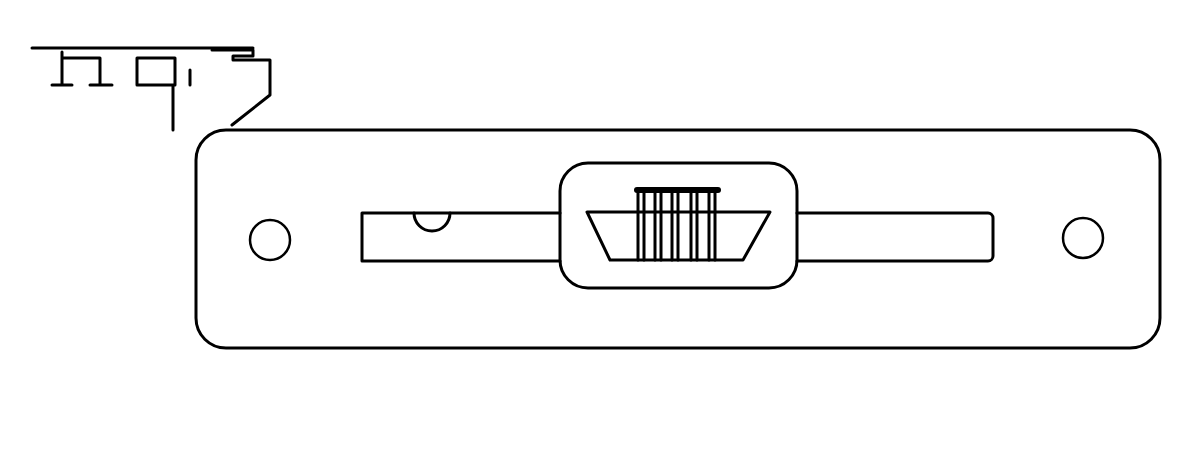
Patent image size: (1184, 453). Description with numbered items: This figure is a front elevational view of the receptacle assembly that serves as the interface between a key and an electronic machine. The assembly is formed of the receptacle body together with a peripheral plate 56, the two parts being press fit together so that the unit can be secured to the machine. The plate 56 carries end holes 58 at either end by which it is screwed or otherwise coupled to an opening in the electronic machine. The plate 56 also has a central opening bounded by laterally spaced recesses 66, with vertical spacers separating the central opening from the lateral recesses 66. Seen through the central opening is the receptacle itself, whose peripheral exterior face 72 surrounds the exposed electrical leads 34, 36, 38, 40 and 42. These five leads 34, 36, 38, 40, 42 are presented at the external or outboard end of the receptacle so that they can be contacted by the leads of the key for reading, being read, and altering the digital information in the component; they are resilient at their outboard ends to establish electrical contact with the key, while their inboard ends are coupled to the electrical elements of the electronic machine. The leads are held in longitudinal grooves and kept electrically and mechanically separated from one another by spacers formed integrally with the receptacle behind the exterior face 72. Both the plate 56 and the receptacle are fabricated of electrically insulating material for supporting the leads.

The electrical lead 34 is at (712, 188).
The electrical lead 36 is at (694, 188).
The electrical lead 38 is at (677, 188).
The electrical lead 40 is at (658, 188).
The electrical lead 42 is at (641, 188).
The peripheral plate 56 is at (425, 310).
The end holes 58 is at (775, 272).
The recesses 66 is at (408, 216).
The peripheral exterior face 72 is at (786, 193).